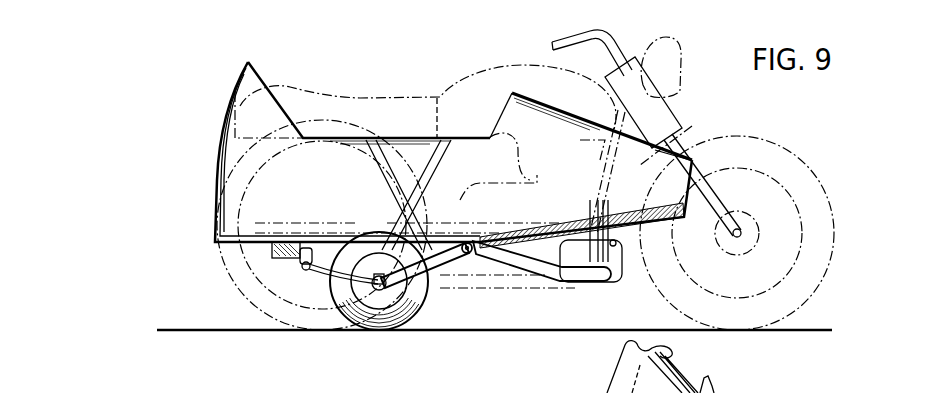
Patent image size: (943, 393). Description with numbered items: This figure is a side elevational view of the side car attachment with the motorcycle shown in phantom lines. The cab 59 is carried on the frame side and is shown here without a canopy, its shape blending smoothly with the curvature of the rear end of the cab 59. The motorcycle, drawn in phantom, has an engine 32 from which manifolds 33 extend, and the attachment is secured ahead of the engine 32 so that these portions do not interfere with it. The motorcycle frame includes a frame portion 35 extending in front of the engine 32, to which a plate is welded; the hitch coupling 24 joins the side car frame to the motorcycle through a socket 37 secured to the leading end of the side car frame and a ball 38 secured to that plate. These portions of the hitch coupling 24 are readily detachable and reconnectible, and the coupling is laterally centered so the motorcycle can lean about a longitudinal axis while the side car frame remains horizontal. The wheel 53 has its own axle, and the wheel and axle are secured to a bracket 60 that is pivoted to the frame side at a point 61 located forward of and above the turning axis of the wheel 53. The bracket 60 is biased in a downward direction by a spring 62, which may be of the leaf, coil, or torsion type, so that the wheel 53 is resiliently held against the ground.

The cab 59 is at (217, 148).
The engine 32 is at (508, 112).
The manifolds 33 is at (668, 143).
The hitch coupling 24 is at (621, 263).
The frame portion 35 is at (566, 268).
The bracket 60 is at (447, 262).
The pivot point 61 is at (468, 253).
The wheel 53 is at (385, 315).
The spring 62 is at (317, 277).
The socket 37 is at (727, 392).
The ball 38 is at (754, 384).